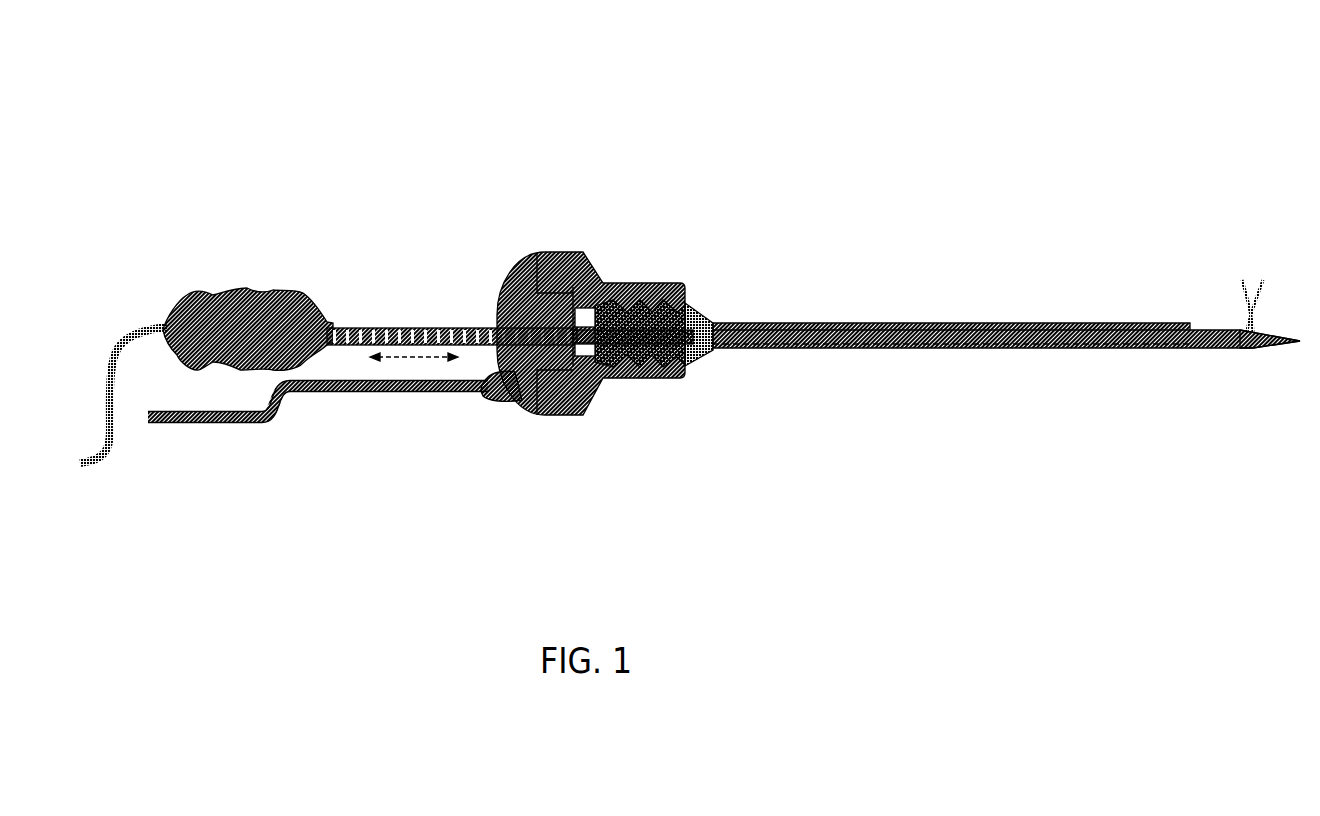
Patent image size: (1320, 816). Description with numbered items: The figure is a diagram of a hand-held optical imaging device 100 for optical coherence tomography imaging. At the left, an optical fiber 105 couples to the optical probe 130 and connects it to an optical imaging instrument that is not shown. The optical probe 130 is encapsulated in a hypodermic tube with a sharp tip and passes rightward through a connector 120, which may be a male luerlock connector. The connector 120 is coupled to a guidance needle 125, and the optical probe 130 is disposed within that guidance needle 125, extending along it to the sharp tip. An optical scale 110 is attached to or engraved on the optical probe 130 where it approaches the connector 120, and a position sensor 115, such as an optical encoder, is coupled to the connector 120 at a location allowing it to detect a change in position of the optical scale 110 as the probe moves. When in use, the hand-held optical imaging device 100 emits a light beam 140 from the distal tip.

The hand-held optical imaging device 100 is at (362, 102).
The optical fiber 105 is at (133, 350).
The optical scale 110 is at (388, 318).
The position sensor 115 is at (527, 390).
The connector 120 is at (589, 310).
The guidance needle 125 is at (730, 322).
The optical probe 130 is at (922, 337).
The light beam 140 is at (1239, 289).